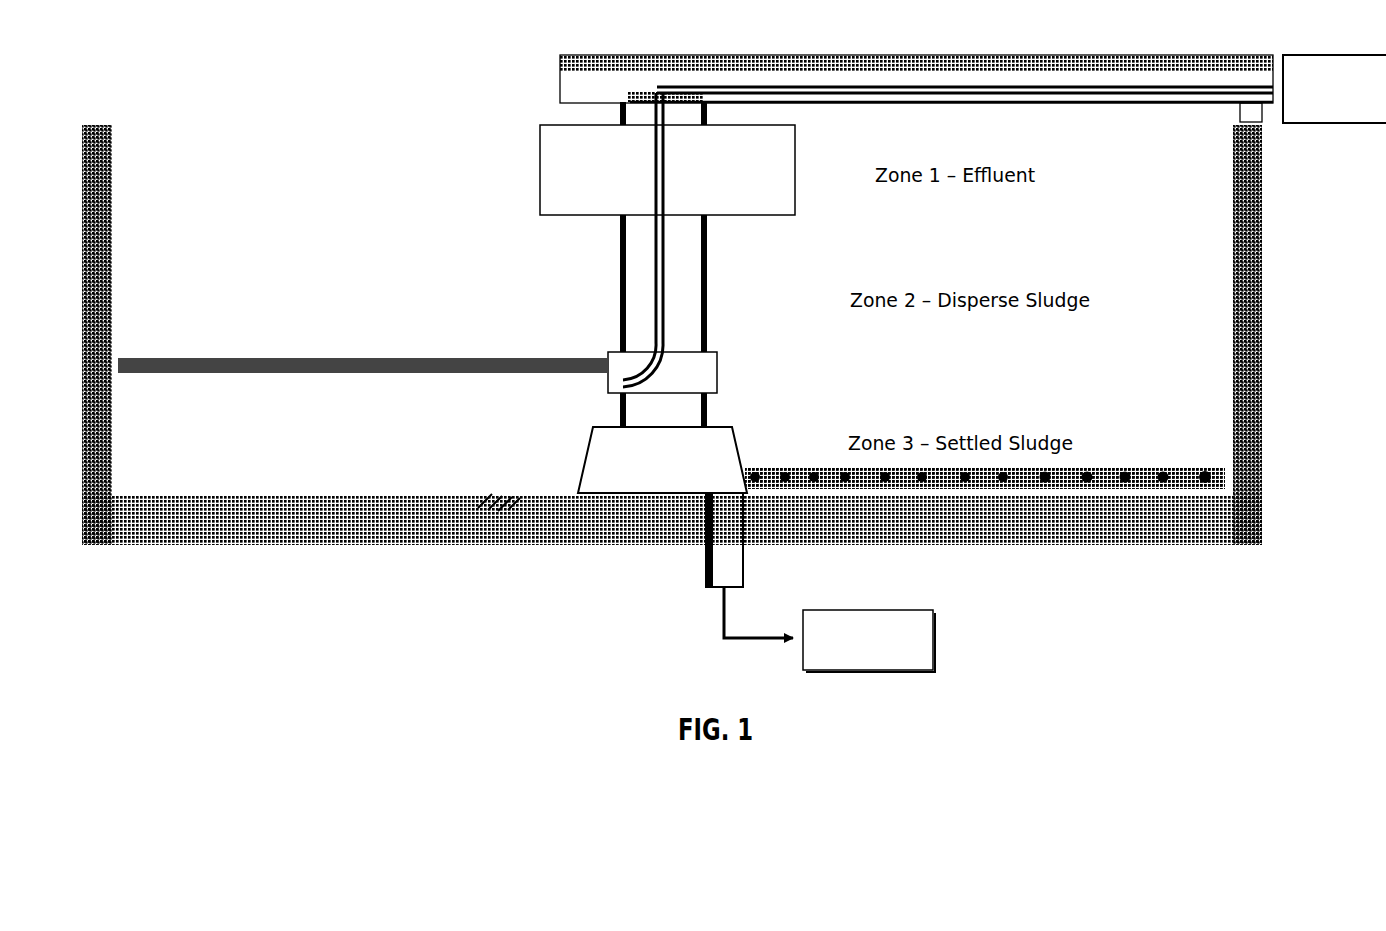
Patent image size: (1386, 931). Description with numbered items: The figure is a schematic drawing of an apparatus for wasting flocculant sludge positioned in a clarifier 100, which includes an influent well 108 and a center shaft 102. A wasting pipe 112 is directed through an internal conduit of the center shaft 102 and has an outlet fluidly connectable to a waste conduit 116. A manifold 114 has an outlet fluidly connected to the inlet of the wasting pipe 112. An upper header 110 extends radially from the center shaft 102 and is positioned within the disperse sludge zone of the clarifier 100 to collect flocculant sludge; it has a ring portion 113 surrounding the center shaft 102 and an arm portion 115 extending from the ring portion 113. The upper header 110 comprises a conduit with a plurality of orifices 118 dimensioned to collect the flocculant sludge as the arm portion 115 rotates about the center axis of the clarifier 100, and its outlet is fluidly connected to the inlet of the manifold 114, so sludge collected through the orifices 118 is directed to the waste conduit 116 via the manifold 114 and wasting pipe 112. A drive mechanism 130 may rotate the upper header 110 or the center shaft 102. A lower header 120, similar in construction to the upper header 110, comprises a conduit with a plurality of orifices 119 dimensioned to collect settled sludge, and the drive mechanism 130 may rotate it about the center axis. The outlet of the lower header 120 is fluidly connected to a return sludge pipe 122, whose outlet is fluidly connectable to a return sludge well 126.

The clarifier 100 is at (286, 122).
The center shaft 102 is at (620, 288).
The influent well 108 is at (667, 170).
The upper header 110 is at (248, 372).
The wasting pipe 112 is at (618, 111).
The ring portion 113 is at (608, 380).
The manifold 114 is at (640, 366).
The arm portion 115 is at (287, 362).
The waste conduit 116 is at (1334, 89).
The plurality of orifices 118 is at (408, 357).
The plurality of orifices 119 is at (787, 475).
The lower header 120 is at (932, 485).
The return sludge pipe 122 is at (702, 540).
The return sludge well 126 is at (829, 629).
The drive mechanism 130 is at (628, 89).